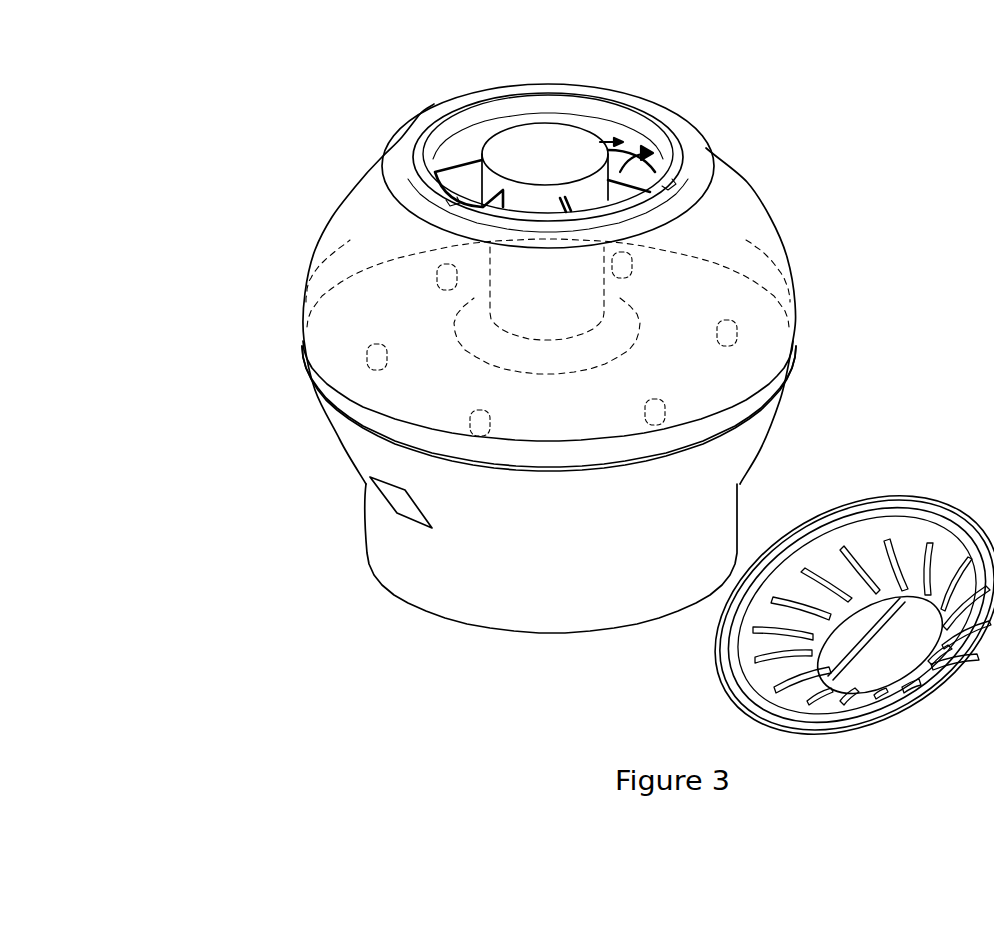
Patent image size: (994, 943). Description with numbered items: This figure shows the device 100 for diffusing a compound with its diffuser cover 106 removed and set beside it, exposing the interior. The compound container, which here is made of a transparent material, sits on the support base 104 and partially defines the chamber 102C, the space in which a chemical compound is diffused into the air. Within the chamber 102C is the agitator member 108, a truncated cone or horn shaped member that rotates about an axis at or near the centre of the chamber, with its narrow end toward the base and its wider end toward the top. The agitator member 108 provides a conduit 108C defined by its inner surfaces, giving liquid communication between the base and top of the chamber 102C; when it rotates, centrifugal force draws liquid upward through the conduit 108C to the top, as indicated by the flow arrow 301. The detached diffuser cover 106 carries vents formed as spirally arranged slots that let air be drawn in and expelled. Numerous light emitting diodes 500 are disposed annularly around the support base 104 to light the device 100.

The device 100 is at (306, 183).
The chamber 102C is at (722, 200).
The support base 104 is at (400, 556).
The diffuser cover 106 is at (931, 480).
The agitator member 108 is at (457, 150).
The conduit 108C is at (606, 322).
The flow arrow 301 is at (637, 142).
The light emitting diodes (LEDs) 500 is at (454, 425).